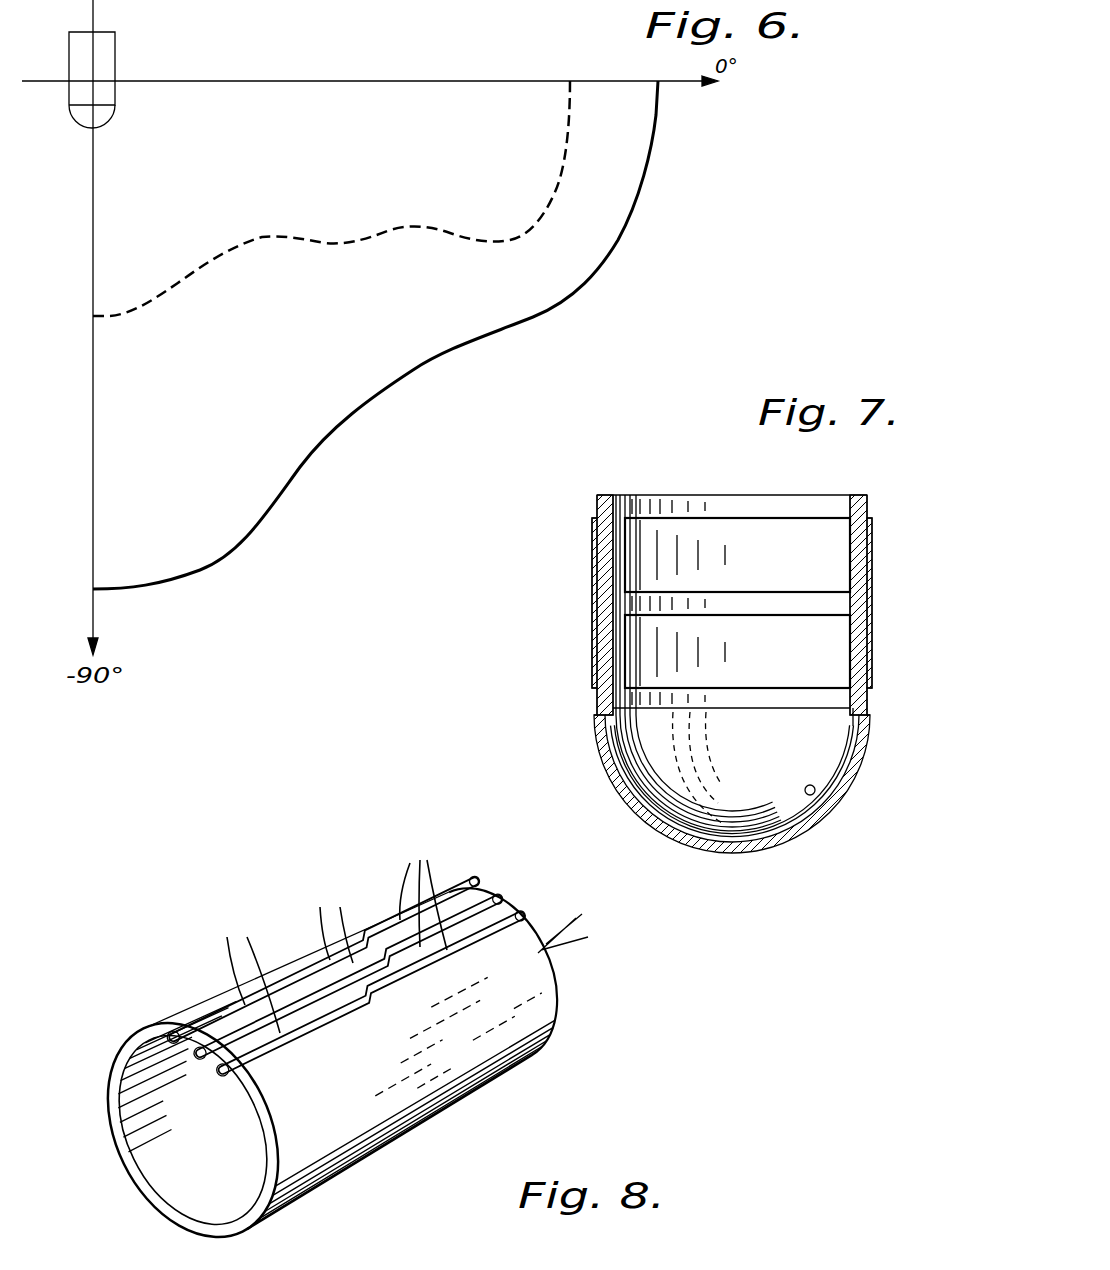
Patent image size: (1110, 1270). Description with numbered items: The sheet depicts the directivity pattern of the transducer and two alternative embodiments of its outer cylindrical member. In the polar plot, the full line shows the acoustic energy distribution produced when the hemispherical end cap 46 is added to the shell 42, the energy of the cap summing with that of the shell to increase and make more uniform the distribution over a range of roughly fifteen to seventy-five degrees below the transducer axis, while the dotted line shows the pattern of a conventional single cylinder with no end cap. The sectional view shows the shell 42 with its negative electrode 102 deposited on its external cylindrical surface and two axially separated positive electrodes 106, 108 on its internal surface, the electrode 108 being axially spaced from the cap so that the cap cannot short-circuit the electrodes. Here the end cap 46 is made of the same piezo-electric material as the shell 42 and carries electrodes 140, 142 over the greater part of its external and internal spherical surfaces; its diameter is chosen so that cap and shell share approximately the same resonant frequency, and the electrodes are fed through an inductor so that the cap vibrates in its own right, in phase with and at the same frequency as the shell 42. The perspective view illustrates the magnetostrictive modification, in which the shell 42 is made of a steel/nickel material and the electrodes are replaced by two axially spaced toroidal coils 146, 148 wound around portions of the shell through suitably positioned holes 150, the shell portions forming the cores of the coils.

In FIG. 6, the outer hollow cylindrical shell 42 is at (108, 40).
In FIG. 7, the outer hollow cylindrical shell 42 is at (597, 501).
In FIG. 8, the outer hollow cylindrical shell 42 is at (372, 1150).
In FIG. 6, the end cap 46 is at (109, 117).
In FIG. 7, the end cap 46 is at (608, 722).
In FIG. 7, the negative electrode 102 is at (597, 583).
In FIG. 7, the positive electrode 106 is at (623, 534).
In FIG. 7, the positive electrode 108 is at (630, 628).
In FIG. 7, the external electrode 140 is at (848, 782).
In FIG. 7, the internal electrode 142 is at (805, 795).
In FIG. 8, the toroidal coil 146 is at (235, 969).
In FIG. 8, the toroidal coil 148 is at (413, 893).
In FIG. 8, the holes 150 is at (323, 919).